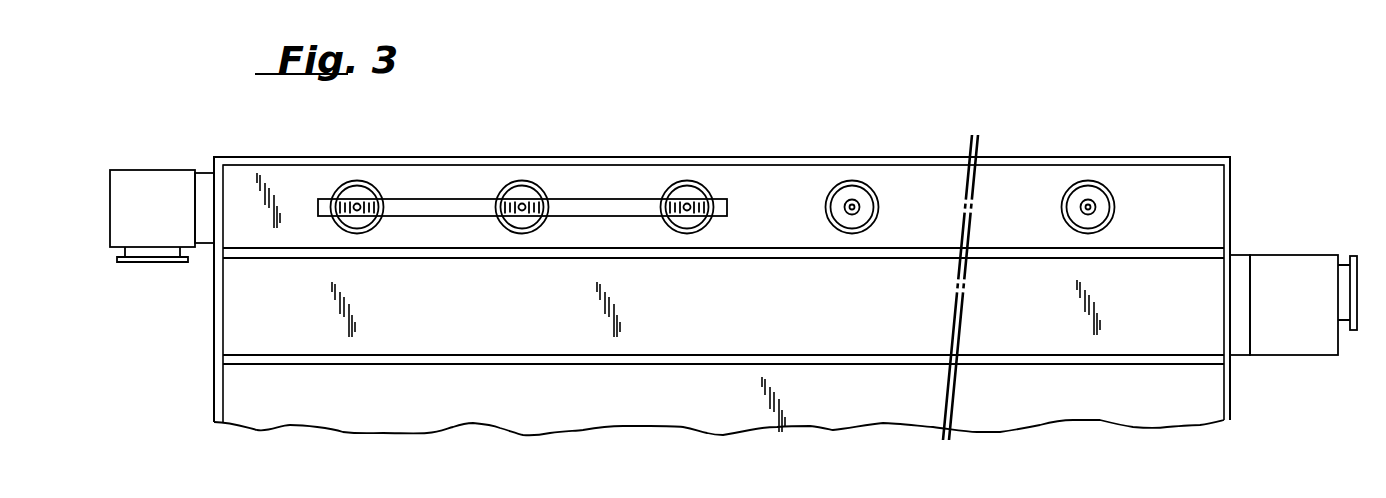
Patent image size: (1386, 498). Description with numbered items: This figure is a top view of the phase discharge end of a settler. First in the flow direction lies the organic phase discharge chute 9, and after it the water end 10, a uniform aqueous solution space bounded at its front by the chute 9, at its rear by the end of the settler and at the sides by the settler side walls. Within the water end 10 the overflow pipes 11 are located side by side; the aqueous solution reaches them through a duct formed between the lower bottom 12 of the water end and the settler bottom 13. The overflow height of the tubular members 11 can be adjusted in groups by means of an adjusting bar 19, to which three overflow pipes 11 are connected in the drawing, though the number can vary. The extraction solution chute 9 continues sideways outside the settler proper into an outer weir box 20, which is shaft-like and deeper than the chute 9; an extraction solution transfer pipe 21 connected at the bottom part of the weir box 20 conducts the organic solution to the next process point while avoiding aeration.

The organic phase discharge chute 9 is at (1045, 342).
The water end 10 is at (433, 187).
The overflow pipes 11 is at (527, 188).
The lower bottom 12 is at (1019, 177).
The settler bottom 13 is at (1105, 393).
The adjusting bar 19 is at (613, 208).
The weir box 20 is at (148, 195).
The extraction solution transfer pipe 21 is at (1342, 272).